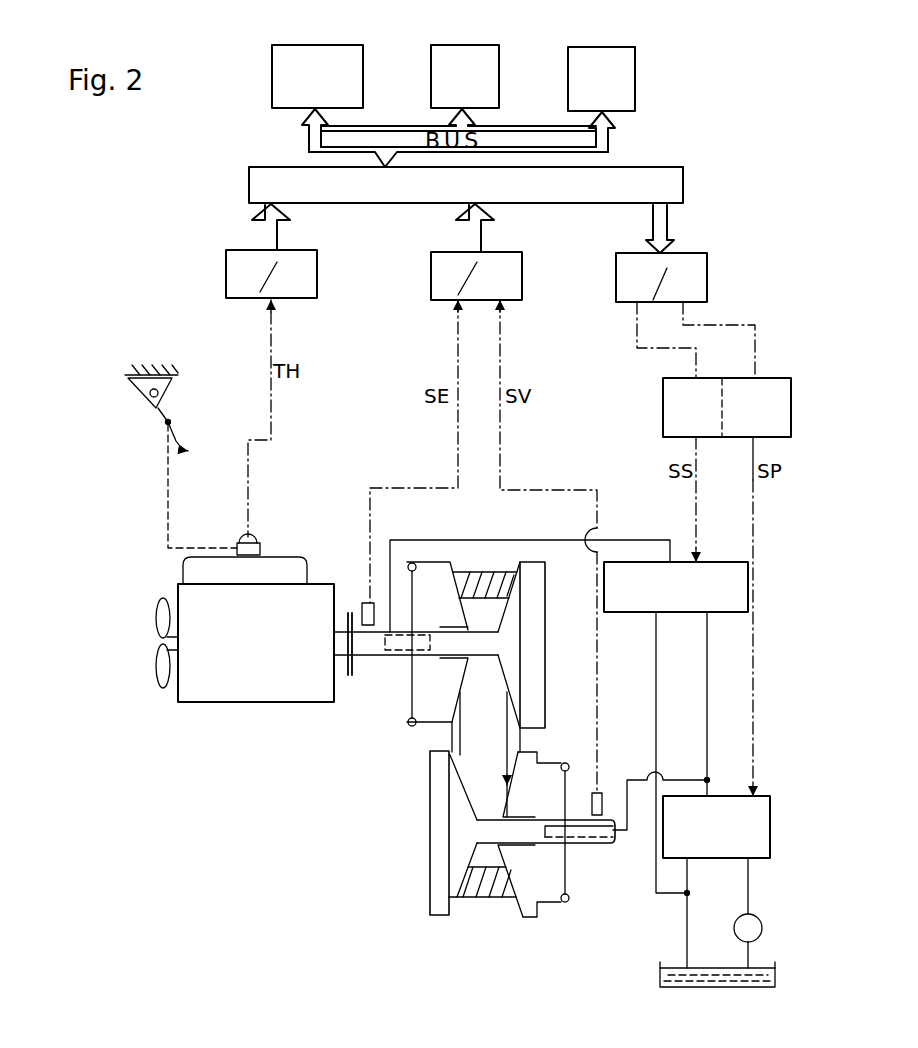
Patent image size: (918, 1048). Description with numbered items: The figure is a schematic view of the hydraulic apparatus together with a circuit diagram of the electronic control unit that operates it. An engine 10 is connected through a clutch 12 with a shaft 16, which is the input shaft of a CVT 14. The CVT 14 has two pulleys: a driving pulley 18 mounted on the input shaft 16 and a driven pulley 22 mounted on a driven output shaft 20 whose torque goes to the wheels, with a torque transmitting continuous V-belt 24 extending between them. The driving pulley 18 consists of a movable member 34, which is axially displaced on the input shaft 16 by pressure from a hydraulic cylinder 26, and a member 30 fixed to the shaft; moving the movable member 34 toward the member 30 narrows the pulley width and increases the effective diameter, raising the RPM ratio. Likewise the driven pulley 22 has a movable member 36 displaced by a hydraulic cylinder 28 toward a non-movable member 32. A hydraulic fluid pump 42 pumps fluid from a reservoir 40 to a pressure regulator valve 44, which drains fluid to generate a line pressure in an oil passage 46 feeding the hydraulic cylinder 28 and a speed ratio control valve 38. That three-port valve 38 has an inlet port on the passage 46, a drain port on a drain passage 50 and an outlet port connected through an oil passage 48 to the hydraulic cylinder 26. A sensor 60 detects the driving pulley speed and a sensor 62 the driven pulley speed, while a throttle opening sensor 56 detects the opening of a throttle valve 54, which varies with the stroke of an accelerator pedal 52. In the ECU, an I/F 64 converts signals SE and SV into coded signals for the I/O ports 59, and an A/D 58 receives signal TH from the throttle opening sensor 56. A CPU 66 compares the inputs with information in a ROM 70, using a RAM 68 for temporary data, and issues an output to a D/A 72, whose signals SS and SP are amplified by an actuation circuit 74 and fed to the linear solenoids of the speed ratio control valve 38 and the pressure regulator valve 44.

The engine 10 is at (235, 690).
The clutch 12 is at (350, 682).
The CVT 14 is at (351, 825).
The shaft 16 is at (488, 645).
The driving pulley 18 is at (470, 677).
The output shaft 20 is at (487, 830).
The driven pulley 22 is at (504, 859).
The V-belt 24 is at (488, 892).
The hydraulic cylinder 26 is at (403, 692).
The hydraulic cylinder 28 is at (574, 866).
The member 30 is at (540, 602).
The non-movable member 32 is at (437, 885).
The movable member 34 is at (427, 724).
The movable member 36 is at (533, 917).
The speed ratio control valve 38 is at (681, 612).
The reservoir 40 is at (660, 978).
The hydraulic fluid pump 42 is at (734, 928).
The pressure regulator valve 44 is at (767, 812).
The oil passage 46 is at (707, 780).
The oil passage 48 is at (520, 540).
The drain passage 50 is at (656, 675).
The accelerator pedal 52 is at (160, 417).
The throttle valve 54 is at (243, 548).
The throttle opening sensor 56 is at (251, 536).
The analog-digital converter 58 is at (230, 285).
The I/O ports 59 is at (250, 188).
The sensor 60 is at (361, 600).
The sensor 62 is at (602, 805).
The interface 64 is at (520, 277).
The central processing unit 66 is at (313, 50).
The random-access memory 68 is at (458, 50).
The read-only memory 70 is at (588, 52).
The digital-analog converter 72 is at (700, 272).
The actuation circuit 74 is at (672, 409).